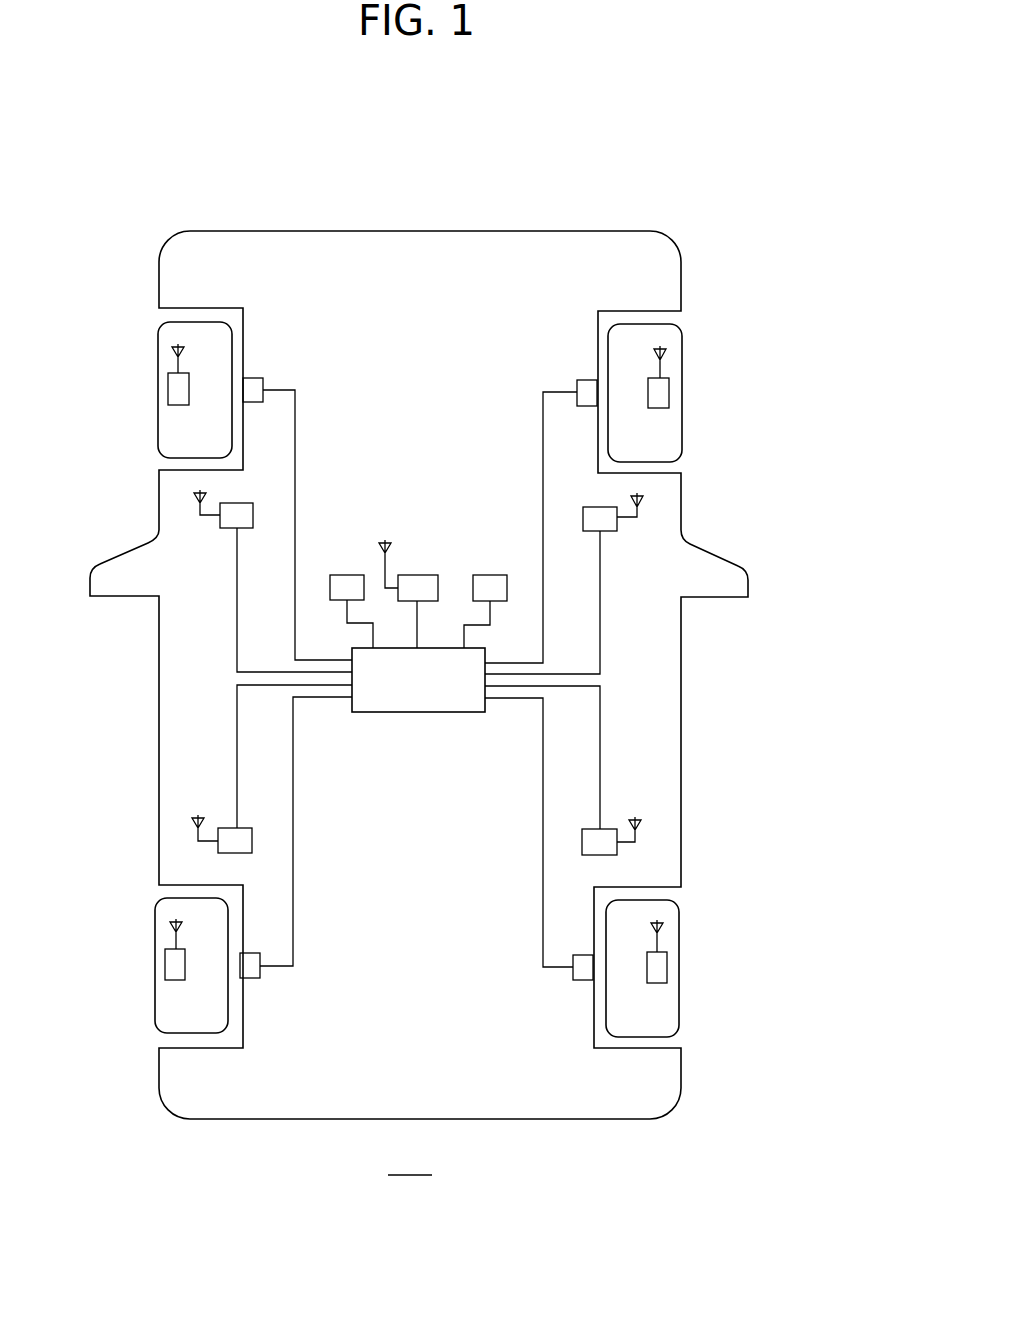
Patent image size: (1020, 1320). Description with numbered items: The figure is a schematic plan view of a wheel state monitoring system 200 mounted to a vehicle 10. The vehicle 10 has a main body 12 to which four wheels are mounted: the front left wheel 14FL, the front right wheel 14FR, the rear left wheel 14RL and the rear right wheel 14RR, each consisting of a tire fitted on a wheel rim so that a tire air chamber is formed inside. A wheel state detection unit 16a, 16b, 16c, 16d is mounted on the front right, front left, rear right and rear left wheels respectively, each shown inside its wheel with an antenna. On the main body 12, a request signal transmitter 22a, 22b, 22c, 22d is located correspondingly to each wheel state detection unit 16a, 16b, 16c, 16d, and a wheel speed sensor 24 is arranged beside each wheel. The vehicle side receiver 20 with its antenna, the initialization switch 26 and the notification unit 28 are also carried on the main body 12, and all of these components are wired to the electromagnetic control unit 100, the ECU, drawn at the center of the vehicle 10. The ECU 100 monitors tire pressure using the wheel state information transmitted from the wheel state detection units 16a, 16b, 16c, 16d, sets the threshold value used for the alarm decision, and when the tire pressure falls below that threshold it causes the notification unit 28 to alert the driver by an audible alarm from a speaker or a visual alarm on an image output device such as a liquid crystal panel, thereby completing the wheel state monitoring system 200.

The vehicle 10 is at (660, 205).
The main body 12 is at (422, 231).
The front left wheel 14FL is at (158, 437).
The front right wheel 14FR is at (682, 437).
The rear left wheel 14RL is at (155, 1010).
The rear right wheel 14RR is at (679, 1012).
The wheel state detection unit 16a is at (669, 393).
The wheel state detection unit 16b is at (168, 390).
The wheel state detection unit 16c is at (667, 968).
The wheel state detection unit 16d is at (165, 967).
The vehicle side receiver 20 is at (420, 575).
The request signal transmitter 22a is at (600, 507).
The request signal transmitter 22b is at (240, 503).
The request signal transmitter 22c is at (600, 855).
The request signal transmitter 22d is at (235, 853).
The wheel speed sensor 24 is at (253, 378).
The initialization switch 26 is at (490, 575).
The notification unit 28 is at (345, 575).
The electromagnetic control unit 100 is at (415, 712).
The wheel state monitoring system 200 is at (410, 1162).